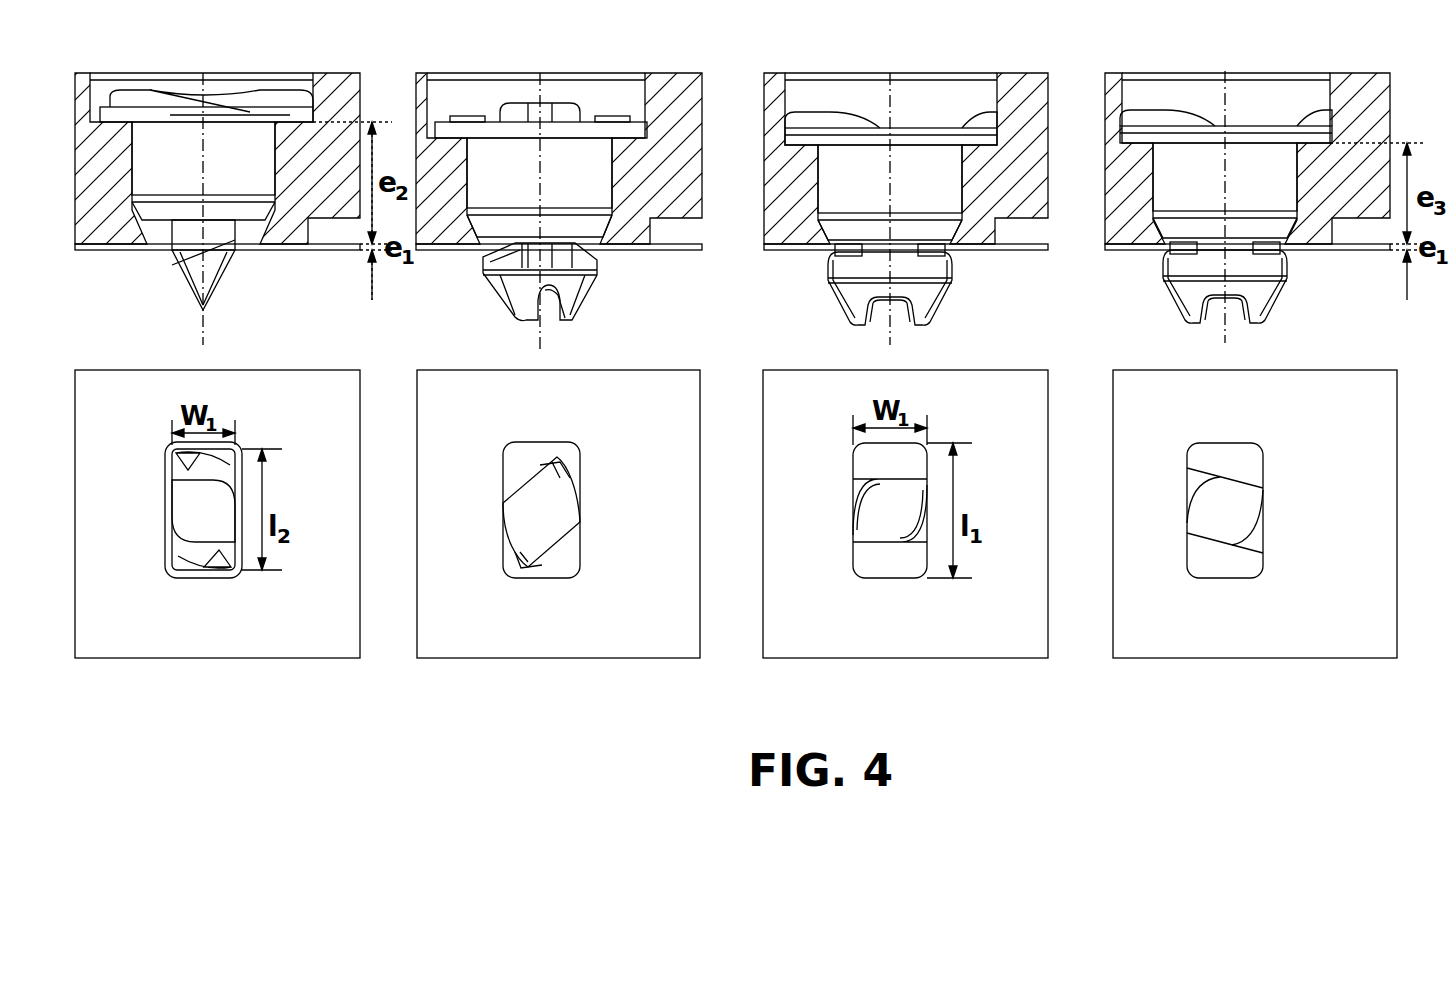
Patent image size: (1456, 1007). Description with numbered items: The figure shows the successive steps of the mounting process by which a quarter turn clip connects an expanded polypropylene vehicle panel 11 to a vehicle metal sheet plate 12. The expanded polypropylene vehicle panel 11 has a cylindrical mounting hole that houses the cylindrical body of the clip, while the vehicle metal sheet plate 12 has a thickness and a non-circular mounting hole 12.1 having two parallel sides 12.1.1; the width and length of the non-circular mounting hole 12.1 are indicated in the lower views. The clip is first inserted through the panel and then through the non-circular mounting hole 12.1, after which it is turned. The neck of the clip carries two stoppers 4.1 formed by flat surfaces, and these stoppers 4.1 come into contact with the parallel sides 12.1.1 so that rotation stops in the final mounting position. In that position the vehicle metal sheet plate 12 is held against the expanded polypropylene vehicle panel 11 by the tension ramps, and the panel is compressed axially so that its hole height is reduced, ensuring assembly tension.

The expanded polypropylene vehicle panel 11 is at (702, 156).
The vehicle metal sheet plate 12 is at (702, 247).
The non-circular mounting hole 12.1 is at (1275, 420).
The stoppers 4.1 is at (1263, 518).
The parallel sides 12.1.1 is at (1187, 560).